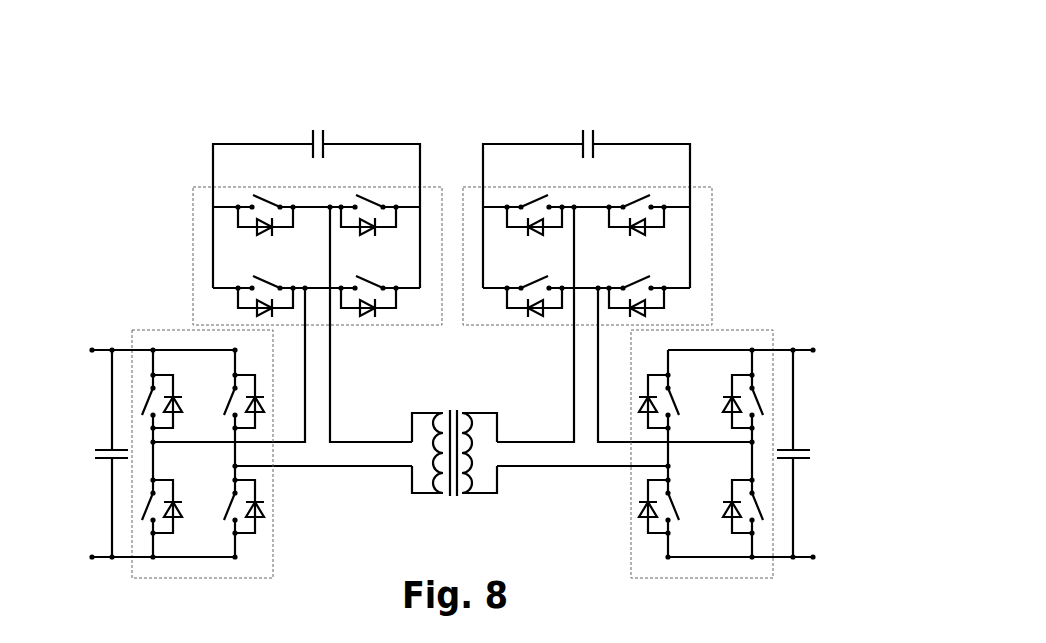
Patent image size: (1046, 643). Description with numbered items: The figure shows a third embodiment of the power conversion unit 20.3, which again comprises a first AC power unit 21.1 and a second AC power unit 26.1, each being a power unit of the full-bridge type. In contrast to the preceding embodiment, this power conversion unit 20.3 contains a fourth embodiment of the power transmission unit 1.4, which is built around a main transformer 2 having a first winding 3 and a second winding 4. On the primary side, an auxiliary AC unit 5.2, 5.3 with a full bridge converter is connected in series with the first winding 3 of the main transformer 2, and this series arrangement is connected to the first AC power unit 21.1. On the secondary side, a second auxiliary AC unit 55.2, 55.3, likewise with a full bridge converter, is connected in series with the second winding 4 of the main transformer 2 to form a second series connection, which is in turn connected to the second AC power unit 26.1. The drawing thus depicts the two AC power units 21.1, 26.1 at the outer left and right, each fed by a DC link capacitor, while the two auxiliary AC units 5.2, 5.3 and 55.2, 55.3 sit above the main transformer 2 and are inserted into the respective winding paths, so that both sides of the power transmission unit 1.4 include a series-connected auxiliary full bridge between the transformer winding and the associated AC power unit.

The power conversion unit 20.3 is at (745, 92).
The power transmission unit 1.4 is at (697, 107).
The auxiliary AC unit 5.2 is at (243, 213).
The auxiliary AC unit 5.3 is at (203, 173).
The second auxiliary AC unit 55.2 is at (673, 225).
The second auxiliary AC unit 55.3 is at (702, 215).
The first AC power unit 21.1 is at (165, 348).
The second AC power unit 26.1 is at (763, 347).
The main transformer 2 is at (452, 410).
The first winding 3 is at (440, 490).
The second winding 4 is at (462, 490).